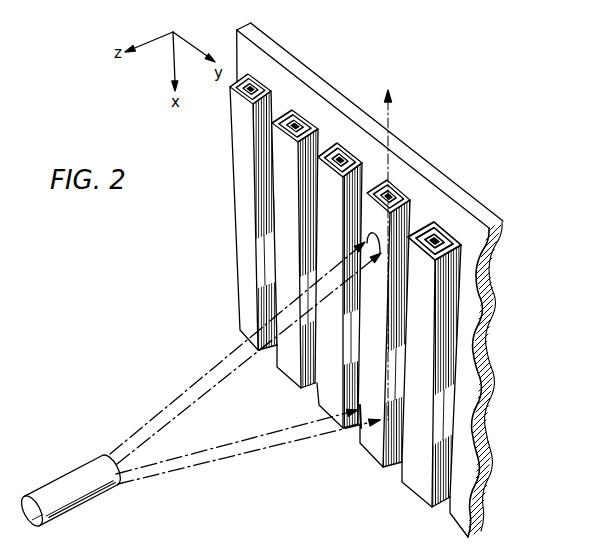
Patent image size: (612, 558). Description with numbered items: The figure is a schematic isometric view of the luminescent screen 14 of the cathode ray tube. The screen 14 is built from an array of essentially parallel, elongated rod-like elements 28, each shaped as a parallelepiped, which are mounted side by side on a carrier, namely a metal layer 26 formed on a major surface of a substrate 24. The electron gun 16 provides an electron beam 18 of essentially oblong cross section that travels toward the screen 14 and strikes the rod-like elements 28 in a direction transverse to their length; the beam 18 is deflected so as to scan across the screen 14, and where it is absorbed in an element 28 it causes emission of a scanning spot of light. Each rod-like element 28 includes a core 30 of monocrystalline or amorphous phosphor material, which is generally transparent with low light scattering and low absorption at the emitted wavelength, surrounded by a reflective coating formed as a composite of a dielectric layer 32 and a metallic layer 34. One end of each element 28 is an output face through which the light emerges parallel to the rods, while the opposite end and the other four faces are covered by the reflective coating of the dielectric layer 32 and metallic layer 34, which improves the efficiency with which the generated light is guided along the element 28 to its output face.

The luminescent screen 14 is at (362, 50).
The electron gun 16 is at (75, 480).
The electron beam 18 is at (167, 407).
The substrate 24 is at (484, 221).
The metal layer 26 is at (469, 272).
The rod-like element 28 is at (250, 277).
The core 30 is at (247, 84).
The dielectric layer 32 is at (341, 151).
The metallic layer 34 is at (412, 202).